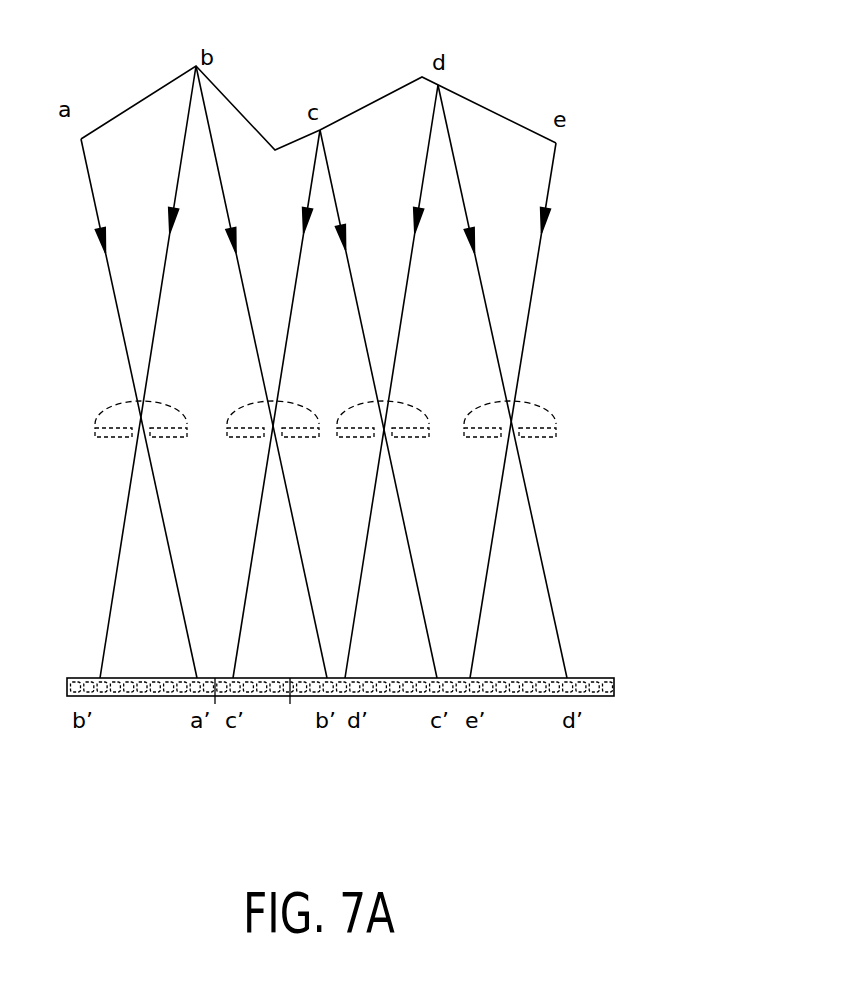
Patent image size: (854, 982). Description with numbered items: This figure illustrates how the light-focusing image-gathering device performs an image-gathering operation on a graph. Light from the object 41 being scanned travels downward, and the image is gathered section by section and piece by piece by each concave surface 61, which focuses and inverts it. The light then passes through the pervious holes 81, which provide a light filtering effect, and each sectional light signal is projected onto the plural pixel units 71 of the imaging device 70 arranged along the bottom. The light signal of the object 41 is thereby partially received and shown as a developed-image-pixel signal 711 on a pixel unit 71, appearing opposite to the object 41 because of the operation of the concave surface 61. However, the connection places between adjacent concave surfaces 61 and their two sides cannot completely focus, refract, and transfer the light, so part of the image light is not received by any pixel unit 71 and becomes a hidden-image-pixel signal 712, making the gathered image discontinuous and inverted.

The object being scanned 41 is at (487, 108).
The concave surface 61 is at (540, 407).
The pervious hole 81 is at (512, 428).
The imaging device 70 is at (614, 678).
The pixel unit 71 is at (125, 697).
The hidden-image-pixel signal 712 is at (215, 704).
The developed-image-pixel signal 711 is at (290, 704).